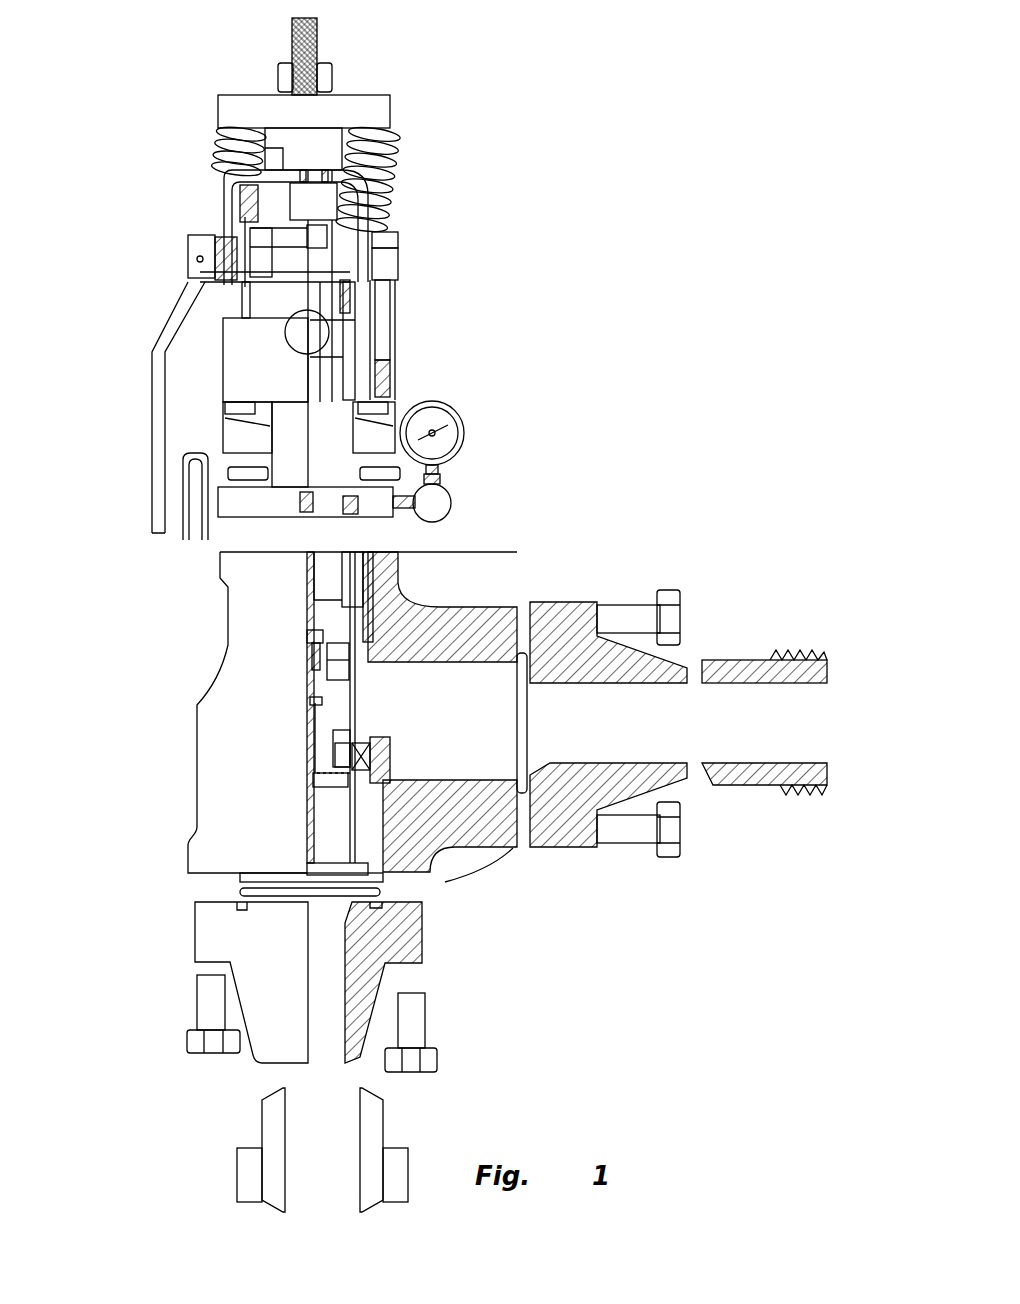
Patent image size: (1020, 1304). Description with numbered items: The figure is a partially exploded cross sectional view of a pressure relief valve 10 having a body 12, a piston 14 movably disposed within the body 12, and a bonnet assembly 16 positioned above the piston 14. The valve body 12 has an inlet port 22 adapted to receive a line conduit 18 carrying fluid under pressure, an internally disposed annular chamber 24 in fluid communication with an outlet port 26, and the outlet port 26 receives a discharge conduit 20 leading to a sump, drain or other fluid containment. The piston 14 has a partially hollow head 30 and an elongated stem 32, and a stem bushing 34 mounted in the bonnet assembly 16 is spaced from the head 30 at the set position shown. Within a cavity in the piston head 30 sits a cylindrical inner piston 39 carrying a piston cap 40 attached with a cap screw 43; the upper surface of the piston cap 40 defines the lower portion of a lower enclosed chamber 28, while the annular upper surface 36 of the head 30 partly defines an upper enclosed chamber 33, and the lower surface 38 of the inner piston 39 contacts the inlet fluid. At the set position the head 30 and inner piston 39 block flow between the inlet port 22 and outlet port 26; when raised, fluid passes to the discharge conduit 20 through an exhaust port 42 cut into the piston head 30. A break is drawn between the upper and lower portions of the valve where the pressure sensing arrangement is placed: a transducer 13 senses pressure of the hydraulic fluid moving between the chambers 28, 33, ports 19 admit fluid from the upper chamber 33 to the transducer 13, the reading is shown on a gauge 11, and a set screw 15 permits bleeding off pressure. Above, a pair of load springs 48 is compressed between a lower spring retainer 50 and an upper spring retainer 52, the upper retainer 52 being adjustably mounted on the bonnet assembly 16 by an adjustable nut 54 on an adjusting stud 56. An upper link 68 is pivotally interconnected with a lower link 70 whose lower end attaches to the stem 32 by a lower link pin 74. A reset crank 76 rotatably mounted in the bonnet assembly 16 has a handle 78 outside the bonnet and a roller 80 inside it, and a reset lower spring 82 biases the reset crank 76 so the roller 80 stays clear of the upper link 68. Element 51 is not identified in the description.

The pressure relief valve 10 is at (582, 125).
The gauge 11 is at (464, 422).
The body 12 is at (495, 476).
The transducer 13 is at (395, 532).
The piston 14 is at (322, 795).
The set screw 15 is at (205, 540).
The bonnet assembly 16 is at (467, 255).
The line conduit 18 is at (325, 1168).
The ports 19 is at (310, 552).
The discharge conduit 20 is at (782, 735).
The inlet port 22 is at (326, 957).
The annular chamber 24 is at (457, 842).
The outlet port 26 is at (530, 733).
The lower enclosed chamber 28 is at (307, 620).
The piston head 30 is at (472, 800).
The stem 32 is at (355, 493).
The upper enclosed chamber 33 is at (345, 580).
The stem bushing 34 is at (348, 522).
The annular upper surface 36 is at (350, 585).
The lower surface 38 is at (333, 733).
The inner piston 39 is at (317, 697).
The piston cap 40 is at (317, 634).
The exhaust port 42 is at (333, 752).
The cap screw 43 is at (320, 655).
The load springs 48 is at (213, 152).
The lower spring retainer 50 is at (397, 630).
The guide block 51 is at (223, 432).
The upper spring retainer 52 is at (390, 104).
The adjustable nut 54 is at (278, 72).
The adjusting stud 56 is at (318, 35).
The upper link 68 is at (318, 325).
The lower link 70 is at (310, 385).
The lower link pin 74 is at (345, 362).
The reset crank 76 is at (188, 260).
The handle 78 is at (152, 482).
The roller 80 is at (337, 235).
The reset lower spring 82 is at (240, 205).